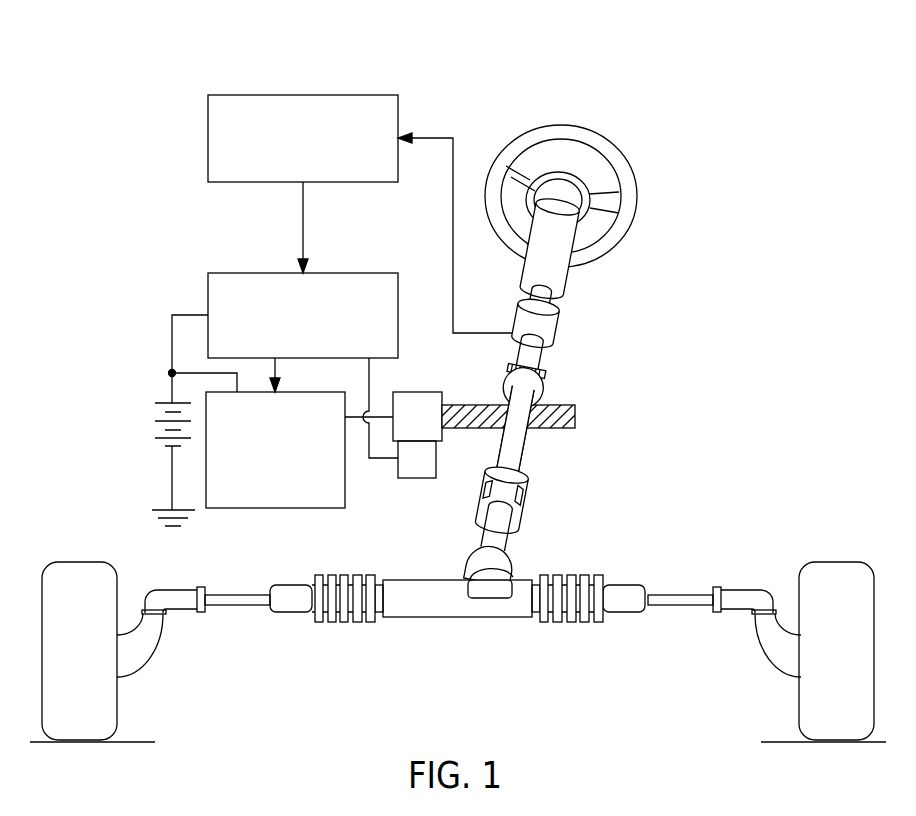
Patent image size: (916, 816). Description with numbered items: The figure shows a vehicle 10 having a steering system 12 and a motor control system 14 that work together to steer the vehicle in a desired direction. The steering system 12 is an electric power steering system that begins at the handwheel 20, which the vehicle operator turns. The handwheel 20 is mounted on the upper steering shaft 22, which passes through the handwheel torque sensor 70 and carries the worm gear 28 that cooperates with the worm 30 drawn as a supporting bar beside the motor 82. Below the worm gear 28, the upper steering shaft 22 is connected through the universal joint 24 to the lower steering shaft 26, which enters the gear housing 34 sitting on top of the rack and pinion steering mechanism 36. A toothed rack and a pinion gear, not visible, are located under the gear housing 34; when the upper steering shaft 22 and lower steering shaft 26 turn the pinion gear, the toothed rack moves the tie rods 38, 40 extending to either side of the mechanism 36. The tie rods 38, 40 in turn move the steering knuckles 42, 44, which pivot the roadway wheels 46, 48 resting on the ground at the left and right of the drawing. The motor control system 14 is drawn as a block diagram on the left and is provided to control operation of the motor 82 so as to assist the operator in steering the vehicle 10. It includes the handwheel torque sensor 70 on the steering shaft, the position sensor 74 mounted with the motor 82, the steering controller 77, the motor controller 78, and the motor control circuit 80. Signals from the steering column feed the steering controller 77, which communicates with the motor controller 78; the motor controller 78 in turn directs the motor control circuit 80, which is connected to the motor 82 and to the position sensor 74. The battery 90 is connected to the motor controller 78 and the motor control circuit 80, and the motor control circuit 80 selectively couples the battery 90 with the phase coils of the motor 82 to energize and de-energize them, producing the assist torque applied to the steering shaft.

The vehicle 10 is at (788, 110).
The steering system 12 is at (658, 217).
The motor control system 14 is at (128, 205).
The handwheel 20 is at (610, 138).
The upper steering shaft 22 is at (562, 296).
The universal joint 24 is at (530, 506).
The lower steering shaft 26 is at (513, 545).
The worm gear 28 is at (548, 390).
The worm 30 is at (575, 425).
The gear housing 34 is at (472, 570).
The rack and pinion steering mechanism 36 is at (582, 578).
The tie rod 38 is at (257, 612).
The tie rod 40 is at (658, 612).
The steering knuckle 42 is at (142, 668).
The steering knuckle 44 is at (777, 667).
The roadway wheel 46 is at (78, 562).
The roadway wheel 48 is at (832, 562).
The handwheel torque sensor 70 is at (562, 336).
The position sensor 74 is at (404, 479).
The steering controller 77 is at (368, 95).
The motor controller 78 is at (372, 273).
The motor control circuit 80 is at (270, 508).
The motor 82 is at (416, 392).
The battery 90 is at (155, 437).